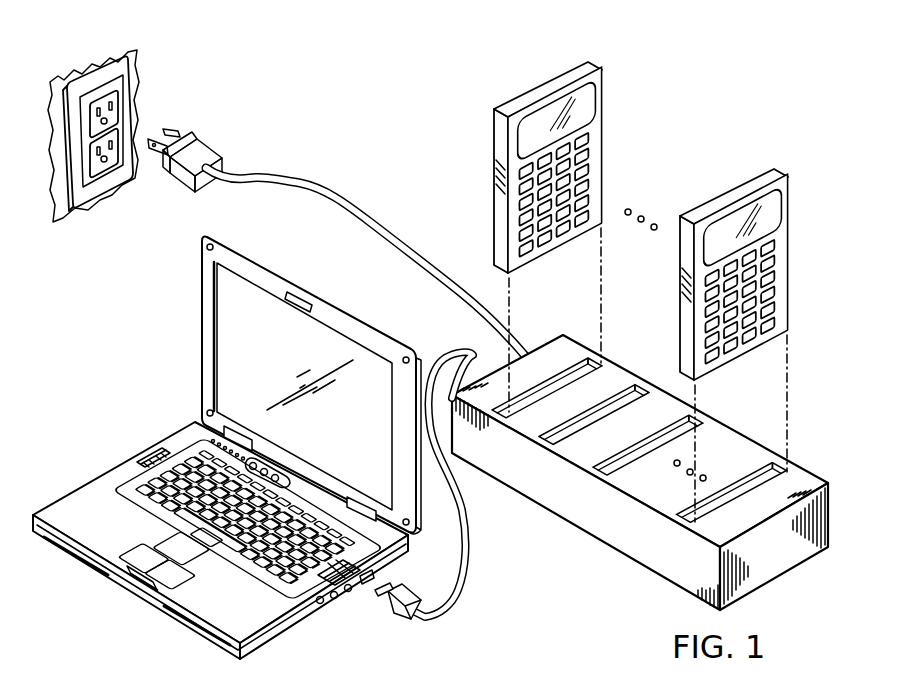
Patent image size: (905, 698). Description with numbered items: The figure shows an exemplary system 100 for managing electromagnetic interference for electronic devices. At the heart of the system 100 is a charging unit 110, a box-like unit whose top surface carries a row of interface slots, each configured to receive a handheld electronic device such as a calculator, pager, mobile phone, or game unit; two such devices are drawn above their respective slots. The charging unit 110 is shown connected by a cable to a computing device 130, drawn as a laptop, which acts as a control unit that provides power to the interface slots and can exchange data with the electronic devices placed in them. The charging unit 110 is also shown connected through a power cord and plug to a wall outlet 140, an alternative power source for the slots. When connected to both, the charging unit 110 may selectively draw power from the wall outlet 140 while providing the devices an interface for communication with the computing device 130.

The system 100 is at (746, 66).
The charging unit 110 is at (558, 505).
The computing device 130 is at (208, 333).
The wall outlet 140 is at (98, 68).